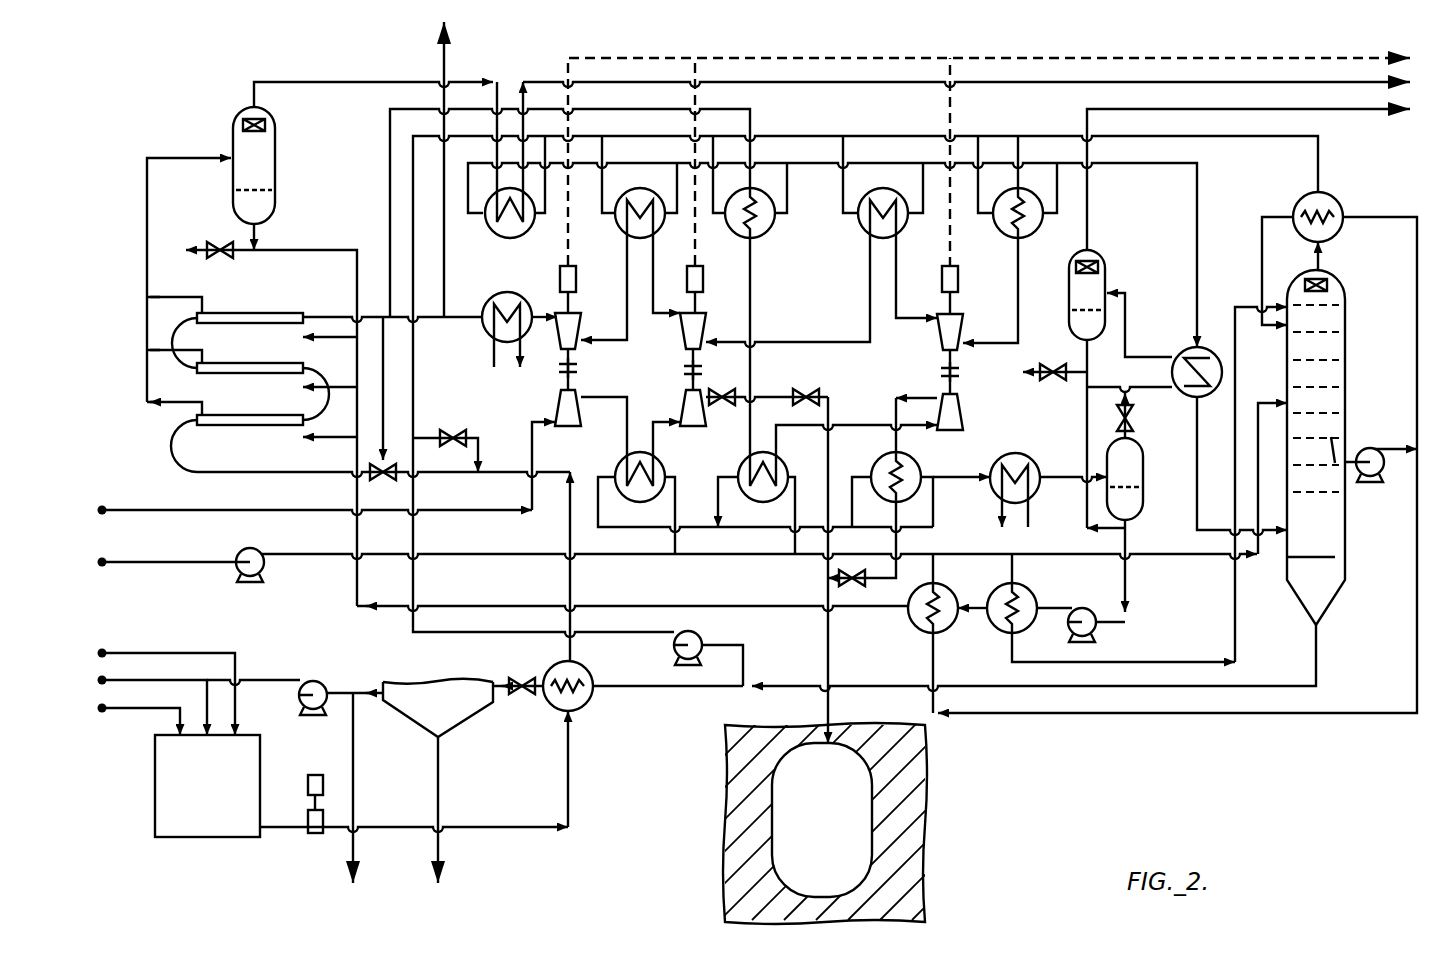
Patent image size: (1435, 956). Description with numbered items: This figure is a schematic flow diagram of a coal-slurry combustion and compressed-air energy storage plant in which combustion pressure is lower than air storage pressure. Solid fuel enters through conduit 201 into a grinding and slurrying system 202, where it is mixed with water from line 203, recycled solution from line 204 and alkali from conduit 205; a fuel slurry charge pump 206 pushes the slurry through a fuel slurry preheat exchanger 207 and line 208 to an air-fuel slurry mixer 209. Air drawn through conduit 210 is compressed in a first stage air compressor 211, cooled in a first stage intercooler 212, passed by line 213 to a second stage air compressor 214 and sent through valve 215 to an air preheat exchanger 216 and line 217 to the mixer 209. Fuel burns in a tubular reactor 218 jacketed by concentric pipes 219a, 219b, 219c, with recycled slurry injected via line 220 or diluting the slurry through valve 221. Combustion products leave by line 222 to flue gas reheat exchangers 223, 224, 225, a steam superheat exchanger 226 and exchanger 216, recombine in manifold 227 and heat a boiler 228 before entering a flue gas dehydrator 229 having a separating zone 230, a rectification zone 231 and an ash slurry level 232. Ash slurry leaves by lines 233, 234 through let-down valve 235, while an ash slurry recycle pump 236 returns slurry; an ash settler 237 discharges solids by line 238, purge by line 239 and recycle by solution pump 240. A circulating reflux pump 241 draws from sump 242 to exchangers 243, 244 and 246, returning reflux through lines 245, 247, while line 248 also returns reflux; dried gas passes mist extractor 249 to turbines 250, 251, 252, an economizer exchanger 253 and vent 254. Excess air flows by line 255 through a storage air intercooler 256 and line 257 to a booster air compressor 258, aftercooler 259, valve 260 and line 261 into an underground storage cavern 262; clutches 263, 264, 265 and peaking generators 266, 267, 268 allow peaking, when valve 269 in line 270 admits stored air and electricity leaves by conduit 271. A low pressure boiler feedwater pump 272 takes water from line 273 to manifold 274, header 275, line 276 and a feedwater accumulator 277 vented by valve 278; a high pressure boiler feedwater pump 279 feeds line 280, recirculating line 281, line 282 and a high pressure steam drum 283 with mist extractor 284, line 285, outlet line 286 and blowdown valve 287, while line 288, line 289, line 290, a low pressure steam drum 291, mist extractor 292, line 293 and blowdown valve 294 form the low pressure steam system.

The conduit 201 is at (168, 708).
The grinding and slurrying system 202 is at (154, 812).
The line 203 is at (168, 680).
The line 204 is at (245, 680).
The conduit 205 is at (168, 653).
The fuel slurry charge pump 206 is at (312, 841).
The fuel slurry preheat exchanger 207 is at (585, 710).
The line 208 is at (568, 589).
The air-fuel slurry mixer 209 is at (383, 479).
The conduit 210 is at (160, 509).
The first stage air compressor 211 is at (555, 409).
The first stage intercooler 212 is at (615, 458).
The line 213 is at (652, 443).
The second stage air compressor 214 is at (681, 401).
The valve 215 is at (730, 388).
The air preheat exchanger 216 is at (755, 238).
The line 217 is at (389, 147).
The tubular reactor 218 is at (266, 476).
The concentric pipe 219a is at (272, 431).
The concentric pipe 219b is at (272, 380).
The concentric pipe 219c is at (272, 331).
The line 220 is at (413, 427).
The valve 221 is at (460, 434).
The line 222 is at (398, 321).
The first stage flue gas reheat exchanger 223 is at (1012, 238).
The second stage flue gas reheat exchanger 224 is at (862, 227).
The third stage flue gas reheat exchanger 225 is at (625, 236).
The steam superheat exchanger 226 is at (502, 242).
The manifold 227 is at (1105, 165).
The boiler 228 is at (1185, 356).
The flue gas dehydrator 229 is at (1325, 610).
The separating zone 230 is at (1320, 528).
The rectification zone 231 is at (1325, 347).
The ash slurry level 232 is at (1330, 556).
The line 233 is at (1316, 660).
The line 234 is at (665, 685).
The let-down valve 235 is at (519, 678).
The ash slurry recycle pump 236 is at (703, 635).
The ash settler 237 is at (463, 730).
The line 238 is at (443, 852).
The line 239 is at (357, 853).
The solution pump 240 is at (320, 680).
The circulating reflux pump 241 is at (1383, 480).
The sump 242 is at (1346, 450).
The circulating reflux-flue gas exchanger 243 is at (1340, 230).
The secondary circulating reflux-boiler feedwater exchanger 244 is at (920, 636).
The line 245 is at (1045, 557).
The primary circulating reflux-boiler feedwater exchanger 246 is at (1003, 637).
The line 247 is at (1236, 630).
The line 248 is at (1262, 250).
The mist extractor 249 is at (1327, 287).
The first stage flue gas turbine 250 is at (938, 341).
The second stage flue gas turbine 251 is at (681, 340).
The third stage flue gas turbine 252 is at (576, 323).
The economizer exchanger 253 is at (500, 292).
The vent 254 is at (446, 62).
The line 255 is at (758, 406).
The storage air intercooler 256 is at (739, 466).
The line 257 is at (847, 411).
The booster air compressor 258 is at (970, 413).
The aftercooler 259 is at (885, 458).
The valve 260 is at (856, 585).
The line 261 is at (829, 667).
The underground storage cavern 262 is at (802, 745).
The clutch 263 is at (943, 375).
The clutch 264 is at (685, 371).
The clutch 265 is at (577, 368).
The first stage peaking generator 266 is at (960, 287).
The second stage peaking generator 267 is at (703, 283).
The third stage peaking generator 268 is at (560, 270).
The valve 269 is at (797, 397).
The line 270 is at (828, 453).
The conduit 271 is at (1350, 58).
The low pressure boiler feedwater pump 272 is at (243, 552).
The line 273 is at (163, 561).
The manifold 274 is at (720, 555).
The header 275 is at (493, 353).
The line 276 is at (520, 364).
The feedwater accumulator 277 is at (1127, 523).
The valve 278 is at (1133, 420).
The high pressure boiler feedwater pump 279 is at (1095, 627).
The line 280 is at (643, 606).
The line 281 is at (300, 254).
The line 282 is at (148, 218).
The high pressure steam drum 283 is at (277, 170).
The mist extractor 284 is at (268, 132).
The line 285 is at (316, 83).
The line 286 is at (1346, 82).
The blowdown valve 287 is at (224, 256).
The line 288 is at (1085, 526).
The line 289 is at (1082, 360).
The line 290 is at (1128, 311).
The low pressure steam drum 291 is at (1069, 283).
The mist extractor 292 is at (1100, 276).
The line 293 is at (1346, 109).
The blowdown valve 294 is at (1058, 378).